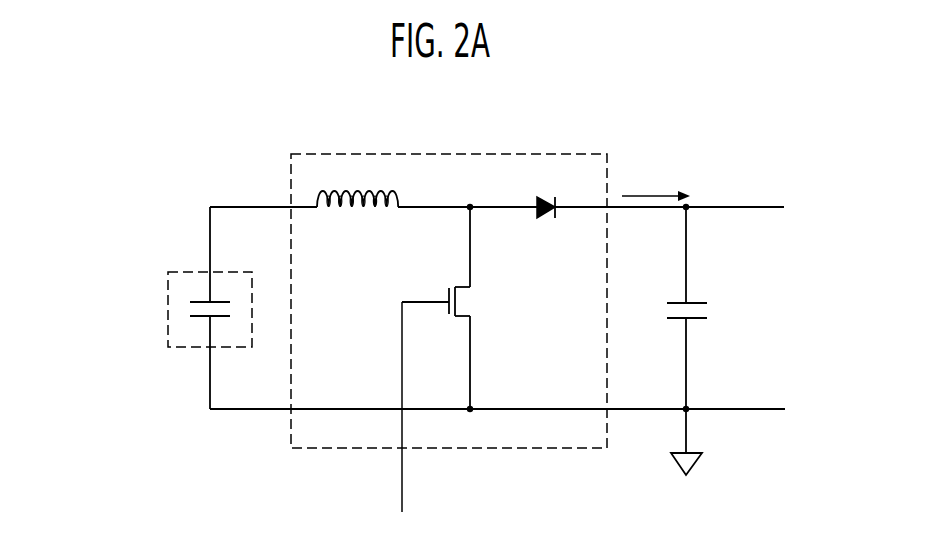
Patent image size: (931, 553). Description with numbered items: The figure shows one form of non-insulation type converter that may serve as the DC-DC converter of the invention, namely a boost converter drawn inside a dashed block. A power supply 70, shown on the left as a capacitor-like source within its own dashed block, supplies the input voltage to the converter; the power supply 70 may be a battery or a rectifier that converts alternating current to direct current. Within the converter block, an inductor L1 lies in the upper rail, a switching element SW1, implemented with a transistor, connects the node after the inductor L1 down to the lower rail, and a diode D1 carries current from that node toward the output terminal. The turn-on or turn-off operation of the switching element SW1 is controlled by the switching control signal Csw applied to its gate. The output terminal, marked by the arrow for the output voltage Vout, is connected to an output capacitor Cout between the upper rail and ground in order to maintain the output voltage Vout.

The power supply 70 is at (168, 301).
The inductor L1 is at (357, 185).
The diode D1 is at (547, 194).
The switching element SW1 is at (450, 308).
The switching control signal Csw is at (402, 423).
The output voltage Vout is at (656, 183).
The output capacitor Cout is at (708, 308).